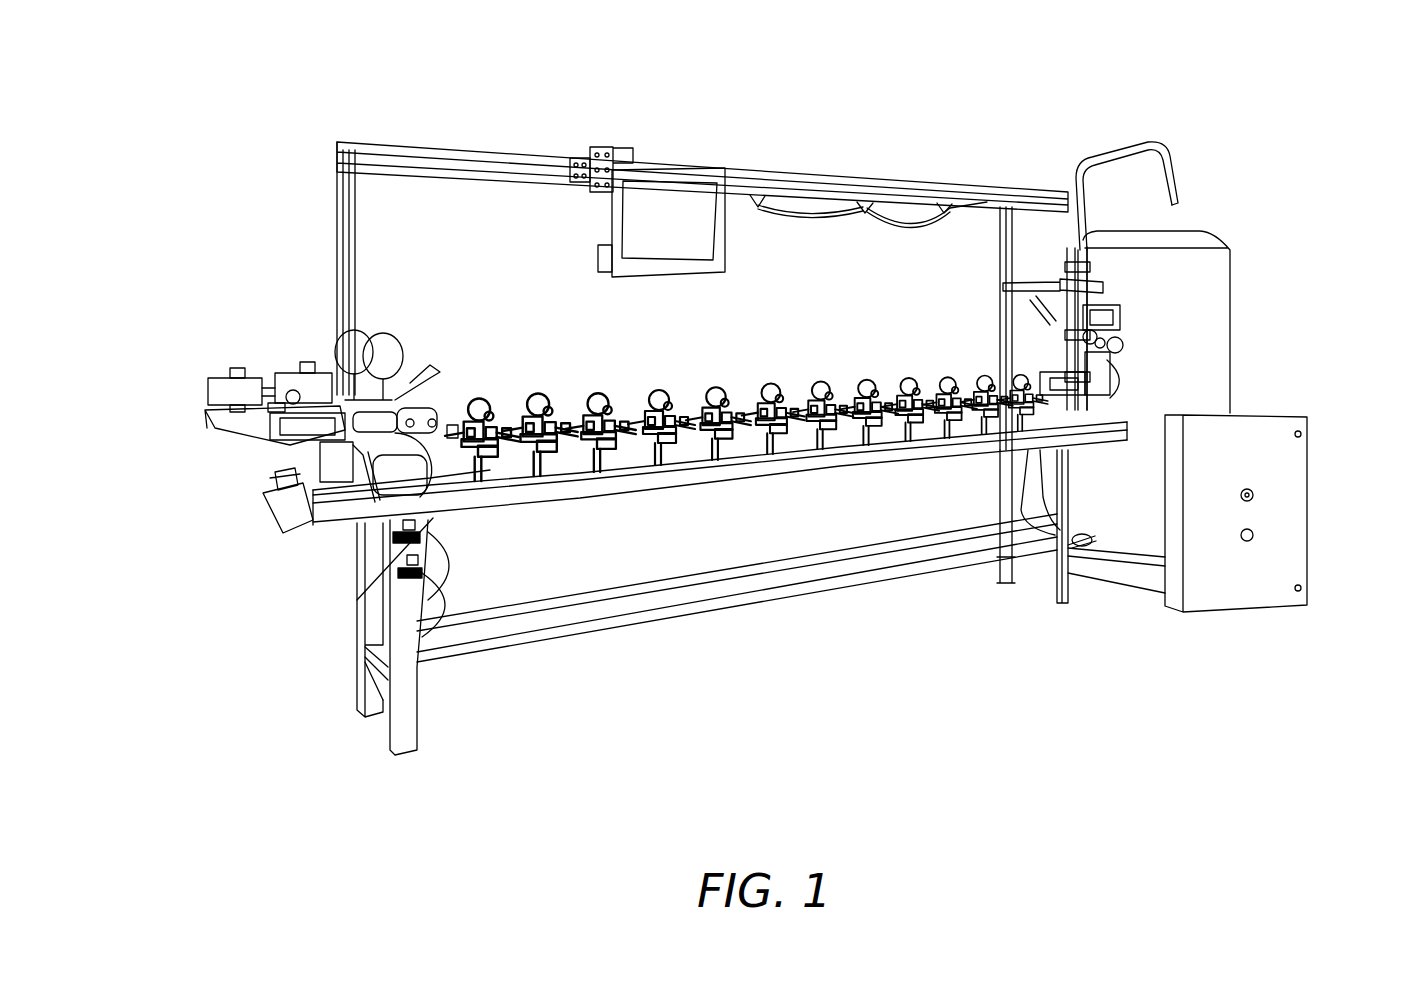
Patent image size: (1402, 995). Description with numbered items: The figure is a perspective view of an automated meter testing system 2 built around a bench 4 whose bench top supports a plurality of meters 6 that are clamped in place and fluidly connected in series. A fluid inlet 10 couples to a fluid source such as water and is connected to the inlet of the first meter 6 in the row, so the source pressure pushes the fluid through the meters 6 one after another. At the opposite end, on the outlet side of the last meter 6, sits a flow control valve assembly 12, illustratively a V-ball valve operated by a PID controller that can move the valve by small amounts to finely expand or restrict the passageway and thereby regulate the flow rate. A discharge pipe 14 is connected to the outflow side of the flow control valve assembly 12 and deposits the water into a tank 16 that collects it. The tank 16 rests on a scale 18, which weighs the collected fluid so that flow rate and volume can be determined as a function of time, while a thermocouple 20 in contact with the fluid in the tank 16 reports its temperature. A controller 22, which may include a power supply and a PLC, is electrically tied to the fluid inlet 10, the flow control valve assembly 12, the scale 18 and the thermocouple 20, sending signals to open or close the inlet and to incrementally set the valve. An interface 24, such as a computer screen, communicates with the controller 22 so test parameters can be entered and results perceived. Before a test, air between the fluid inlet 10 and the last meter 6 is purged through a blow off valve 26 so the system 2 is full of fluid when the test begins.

The automated meter testing system 2 is at (937, 73).
The bench 4 is at (302, 587).
The meters 6 is at (582, 398).
The fluid inlet 10 is at (177, 393).
The flow control valve assembly 12 is at (1057, 320).
The discharge pipe 14 is at (1118, 158).
The tank 16 is at (1220, 308).
The scale 18 is at (1128, 578).
The thermocouple 20 is at (1058, 550).
The controller 22 is at (1308, 507).
The interface 24 is at (673, 165).
The blow off valve 26 is at (1112, 383).